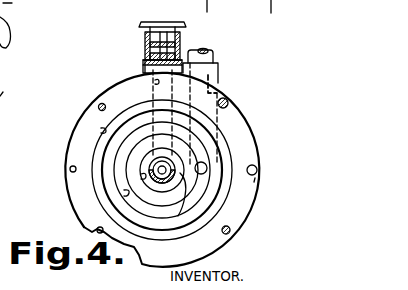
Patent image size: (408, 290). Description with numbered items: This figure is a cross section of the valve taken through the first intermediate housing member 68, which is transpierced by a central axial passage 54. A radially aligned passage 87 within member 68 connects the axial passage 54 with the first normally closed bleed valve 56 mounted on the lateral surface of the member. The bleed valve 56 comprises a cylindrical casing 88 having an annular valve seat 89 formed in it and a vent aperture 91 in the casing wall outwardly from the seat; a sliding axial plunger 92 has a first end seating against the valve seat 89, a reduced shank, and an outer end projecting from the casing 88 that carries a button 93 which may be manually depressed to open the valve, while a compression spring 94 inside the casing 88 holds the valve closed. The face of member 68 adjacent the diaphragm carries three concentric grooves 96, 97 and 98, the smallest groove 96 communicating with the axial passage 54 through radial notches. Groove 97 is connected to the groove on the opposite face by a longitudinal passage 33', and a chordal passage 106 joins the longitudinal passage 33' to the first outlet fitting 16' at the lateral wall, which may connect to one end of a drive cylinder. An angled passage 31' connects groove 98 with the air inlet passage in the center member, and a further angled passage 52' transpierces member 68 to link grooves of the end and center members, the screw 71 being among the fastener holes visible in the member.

The first normally closed bleed valve 56 is at (139, 21).
The button 93 is at (152, 29).
The sliding axial plunger 92 is at (147, 37).
The compression spring 94 is at (143, 52).
The annular valve seat 89 is at (147, 64).
The cylindrical casing 88 is at (181, 36).
The vent aperture 91 is at (208, 50).
The first outlet fitting 16' is at (214, 66).
The chordal passage 106 is at (222, 92).
The first intermediate housing member 68 is at (229, 104).
The longitudinal passage 33' is at (240, 153).
The angled passage 31' is at (269, 162).
The radially aligned passage 87 is at (155, 83).
The screw 71 is at (99, 106).
The concentric groove 98 is at (102, 131).
The angled passage 52' is at (54, 163).
The concentric groove 96 is at (143, 177).
The concentric groove 97 is at (126, 194).
The axial passage 54 is at (168, 176).